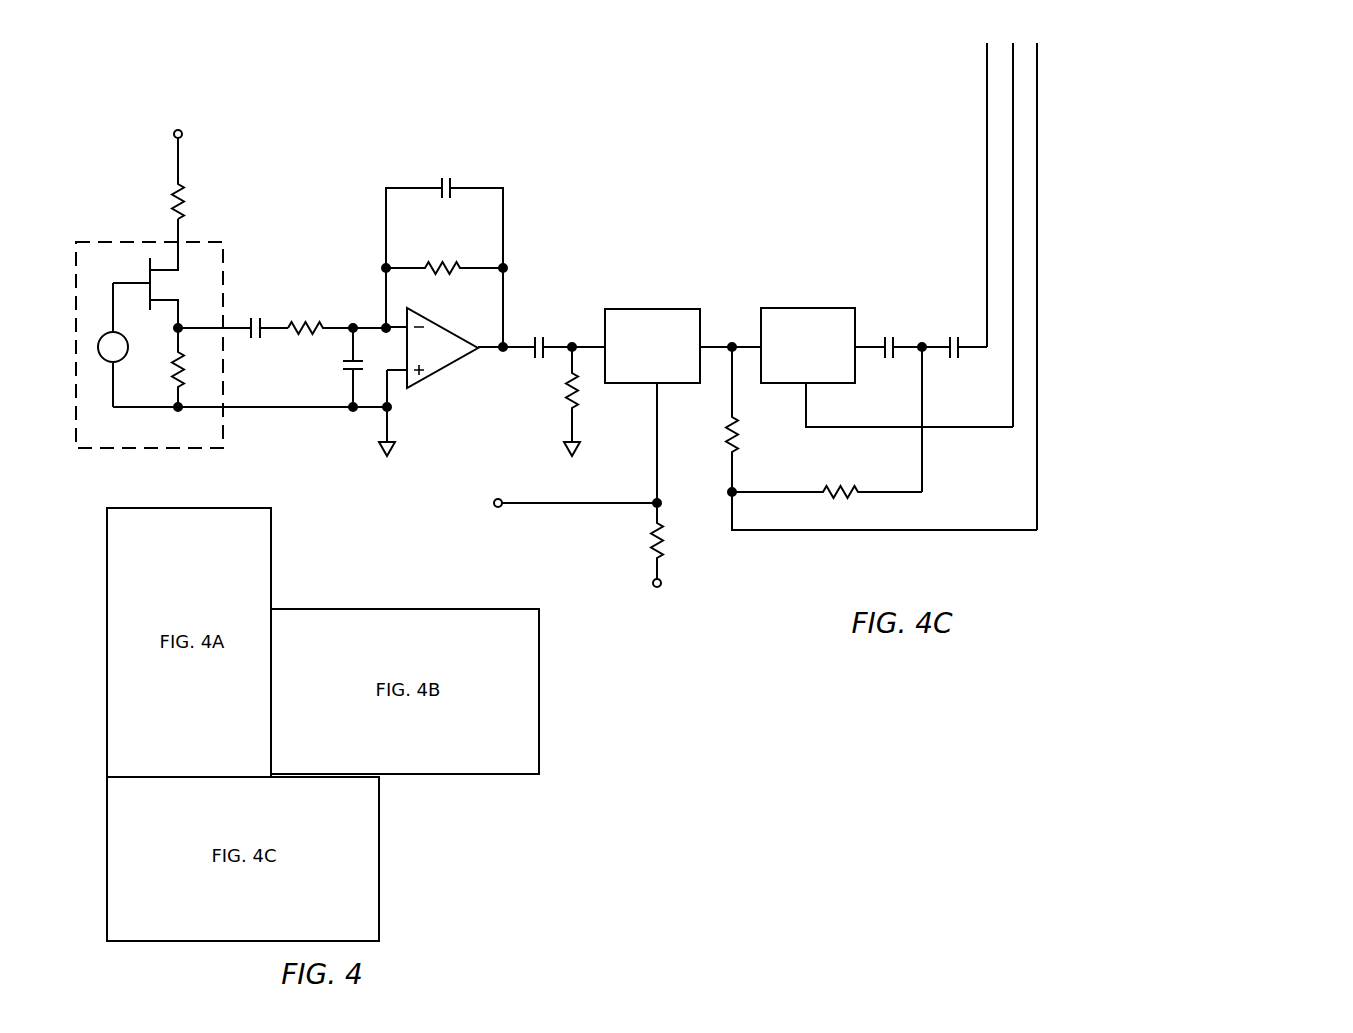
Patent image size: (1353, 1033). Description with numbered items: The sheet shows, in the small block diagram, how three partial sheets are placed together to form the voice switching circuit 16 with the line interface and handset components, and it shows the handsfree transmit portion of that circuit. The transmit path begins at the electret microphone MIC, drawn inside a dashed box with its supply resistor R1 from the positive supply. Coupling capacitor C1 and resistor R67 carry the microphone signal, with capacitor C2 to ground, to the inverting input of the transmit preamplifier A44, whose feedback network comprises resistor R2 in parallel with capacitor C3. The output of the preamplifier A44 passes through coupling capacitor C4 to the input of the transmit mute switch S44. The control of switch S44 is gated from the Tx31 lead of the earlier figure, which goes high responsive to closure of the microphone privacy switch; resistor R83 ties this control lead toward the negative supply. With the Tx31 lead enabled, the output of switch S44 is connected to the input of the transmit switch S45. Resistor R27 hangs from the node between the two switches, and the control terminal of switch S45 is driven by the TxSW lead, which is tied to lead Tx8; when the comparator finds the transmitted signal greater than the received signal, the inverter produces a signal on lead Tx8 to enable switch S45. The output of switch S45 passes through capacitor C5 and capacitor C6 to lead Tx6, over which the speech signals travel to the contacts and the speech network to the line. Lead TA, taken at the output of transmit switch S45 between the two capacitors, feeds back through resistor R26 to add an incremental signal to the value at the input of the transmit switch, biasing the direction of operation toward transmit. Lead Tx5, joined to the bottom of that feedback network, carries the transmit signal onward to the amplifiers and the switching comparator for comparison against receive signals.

The electret microphone MIC is at (149, 333).
The resistor R1 is at (190, 163).
The capacitor C1 is at (233, 318).
The resistor R67 is at (339, 316).
The capacitor C2 is at (336, 369).
The capacitor C3 is at (444, 250).
The resistor R2 is at (444, 256).
The transmit preamplifier A44 is at (442, 358).
The capacitor C4 is at (540, 336).
The transmit mute switch S44 is at (640, 309).
The transmit switch S45 is at (792, 308).
The transmit switch lead Tx SW. TxSW is at (909, 405).
The capacitor C5 is at (890, 333).
The capacitor C6 is at (955, 333).
The resistor R27 is at (753, 421).
The resistor R26 is at (827, 479).
The lead TA is at (923, 468).
The Tx 31 lead Tx31 is at (545, 460).
The resistor R83 is at (674, 558).
The lead Tx 6 Tx6 is at (987, 160).
The lead Tx 8 Tx8 is at (1013, 170).
The lead Tx 5 Tx5 is at (1037, 213).
The voice switching circuit 16 is at (1246, 414).